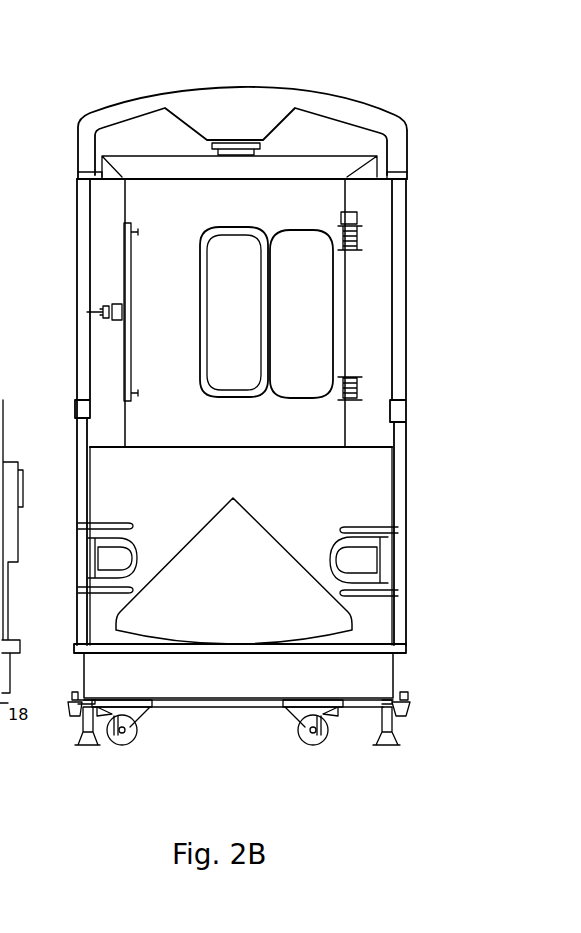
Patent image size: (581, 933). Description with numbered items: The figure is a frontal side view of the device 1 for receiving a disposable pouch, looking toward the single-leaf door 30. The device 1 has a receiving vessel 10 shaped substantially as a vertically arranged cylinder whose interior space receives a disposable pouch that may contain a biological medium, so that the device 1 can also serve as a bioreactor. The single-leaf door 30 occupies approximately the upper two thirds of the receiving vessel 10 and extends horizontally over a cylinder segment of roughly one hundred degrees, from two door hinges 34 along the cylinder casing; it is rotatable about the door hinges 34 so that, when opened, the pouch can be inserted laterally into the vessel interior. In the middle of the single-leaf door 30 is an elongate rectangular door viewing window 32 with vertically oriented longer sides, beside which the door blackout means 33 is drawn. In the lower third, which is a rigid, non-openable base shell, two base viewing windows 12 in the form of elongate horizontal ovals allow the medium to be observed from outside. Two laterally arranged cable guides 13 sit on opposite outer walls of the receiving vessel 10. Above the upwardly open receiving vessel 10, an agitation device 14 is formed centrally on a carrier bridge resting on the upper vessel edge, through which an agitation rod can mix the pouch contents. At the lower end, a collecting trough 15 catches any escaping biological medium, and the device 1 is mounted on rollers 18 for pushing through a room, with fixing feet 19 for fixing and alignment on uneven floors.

The device 1 is at (458, 295).
The receiving vessel 10 is at (373, 487).
The base viewing window 12 is at (120, 552).
The cable guide 13 is at (402, 378).
The agitation device 14 is at (253, 102).
The collecting trough 15 is at (377, 678).
The rollers 18 is at (120, 742).
The fixing feet 19 is at (77, 743).
The single-leaf door 30 is at (301, 433).
The door viewing window 32 is at (228, 245).
The door blackout means 33 is at (292, 240).
The door hinge 34 is at (348, 253).